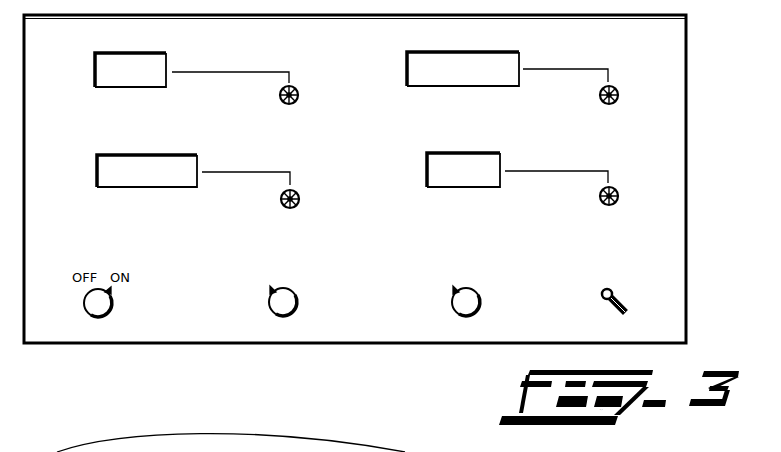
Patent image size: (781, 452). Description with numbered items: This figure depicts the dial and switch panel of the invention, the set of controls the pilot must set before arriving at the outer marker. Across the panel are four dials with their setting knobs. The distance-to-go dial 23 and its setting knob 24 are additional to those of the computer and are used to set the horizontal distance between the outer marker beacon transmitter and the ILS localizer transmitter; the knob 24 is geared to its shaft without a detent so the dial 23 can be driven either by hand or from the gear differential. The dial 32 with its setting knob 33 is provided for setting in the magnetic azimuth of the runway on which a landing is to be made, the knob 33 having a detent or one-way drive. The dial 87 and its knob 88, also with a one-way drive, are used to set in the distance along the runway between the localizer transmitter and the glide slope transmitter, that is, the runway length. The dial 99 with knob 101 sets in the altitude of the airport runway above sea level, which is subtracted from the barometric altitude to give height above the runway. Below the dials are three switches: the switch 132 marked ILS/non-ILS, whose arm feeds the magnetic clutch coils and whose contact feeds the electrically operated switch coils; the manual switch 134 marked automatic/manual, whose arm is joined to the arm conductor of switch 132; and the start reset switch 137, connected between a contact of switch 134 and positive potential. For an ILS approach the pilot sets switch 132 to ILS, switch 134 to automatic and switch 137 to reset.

The distance-to-go dial 23 is at (95, 53).
The setting knob 24 is at (283, 103).
The dial 32 is at (97, 155).
The setting knob 33 is at (282, 205).
The dial 87 is at (407, 52).
The setting knob 88 is at (602, 102).
The dial 99 is at (428, 153).
The knob 101 is at (603, 205).
The switch 132 is at (269, 305).
The manual switch 134 is at (453, 305).
The start reset switch 137 is at (602, 297).